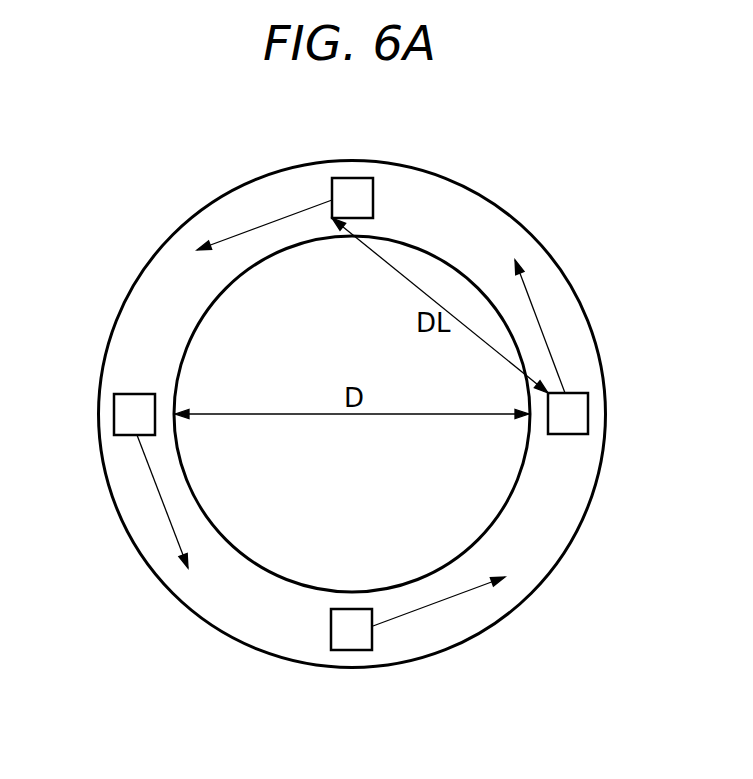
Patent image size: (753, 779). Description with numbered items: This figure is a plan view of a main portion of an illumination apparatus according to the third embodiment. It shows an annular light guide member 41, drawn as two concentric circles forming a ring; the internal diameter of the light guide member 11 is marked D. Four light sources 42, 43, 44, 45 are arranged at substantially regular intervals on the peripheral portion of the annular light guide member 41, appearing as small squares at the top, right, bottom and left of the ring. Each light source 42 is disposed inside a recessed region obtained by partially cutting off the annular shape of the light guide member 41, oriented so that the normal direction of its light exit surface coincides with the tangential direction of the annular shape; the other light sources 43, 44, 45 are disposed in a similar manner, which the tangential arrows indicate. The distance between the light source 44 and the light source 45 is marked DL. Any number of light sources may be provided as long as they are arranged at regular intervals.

The light guide member 11 is at (580, 192).
The light guide member 41 is at (527, 262).
The light source 42 is at (136, 414).
The light source 43 is at (358, 642).
The light source 44 is at (580, 413).
The light source 45 is at (350, 183).